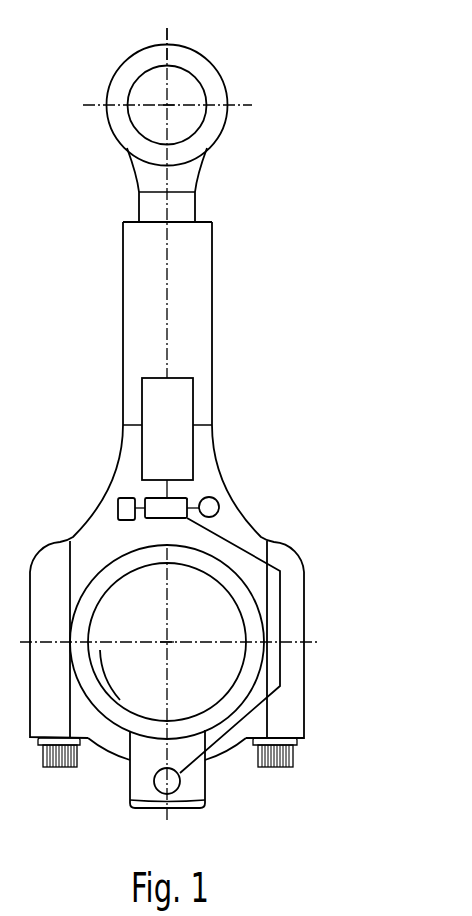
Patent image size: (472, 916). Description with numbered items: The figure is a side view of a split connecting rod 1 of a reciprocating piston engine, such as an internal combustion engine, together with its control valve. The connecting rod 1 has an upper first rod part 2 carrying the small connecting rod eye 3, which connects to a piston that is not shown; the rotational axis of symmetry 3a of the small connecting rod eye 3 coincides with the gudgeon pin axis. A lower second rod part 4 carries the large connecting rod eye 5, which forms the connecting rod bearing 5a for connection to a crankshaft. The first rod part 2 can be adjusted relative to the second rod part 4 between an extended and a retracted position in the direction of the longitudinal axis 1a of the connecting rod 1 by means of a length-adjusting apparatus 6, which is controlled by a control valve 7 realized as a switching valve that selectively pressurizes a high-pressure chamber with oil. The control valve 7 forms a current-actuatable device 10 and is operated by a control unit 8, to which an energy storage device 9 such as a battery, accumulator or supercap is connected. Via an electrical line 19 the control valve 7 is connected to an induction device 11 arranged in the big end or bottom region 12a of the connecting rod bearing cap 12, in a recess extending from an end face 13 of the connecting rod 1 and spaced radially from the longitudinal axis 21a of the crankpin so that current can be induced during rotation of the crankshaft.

The connecting rod 1 is at (213, 288).
The longitudinal axis 1a is at (163, 36).
The upper first rod part 2 is at (193, 170).
The small connecting rod eye 3 is at (142, 93).
The rotational axis of symmetry 3a is at (167, 105).
The lower second rod part 4 is at (207, 465).
The large connecting rod eye 5 is at (117, 682).
The connecting rod bearing 5a is at (108, 594).
The length-adjusting apparatus 6 is at (197, 390).
The control valve 7 is at (147, 498).
The control unit 8 is at (118, 507).
The energy storage device 9 is at (218, 504).
The current-actuatable device 10 is at (189, 497).
The induction device 11 is at (183, 785).
The connecting rod bearing cap 12 is at (290, 682).
The big end or bottom region 12a is at (130, 785).
The end face 13 is at (192, 797).
The electrical line 19 is at (280, 603).
The longitudinal axis of the crankpin 21a is at (167, 642).